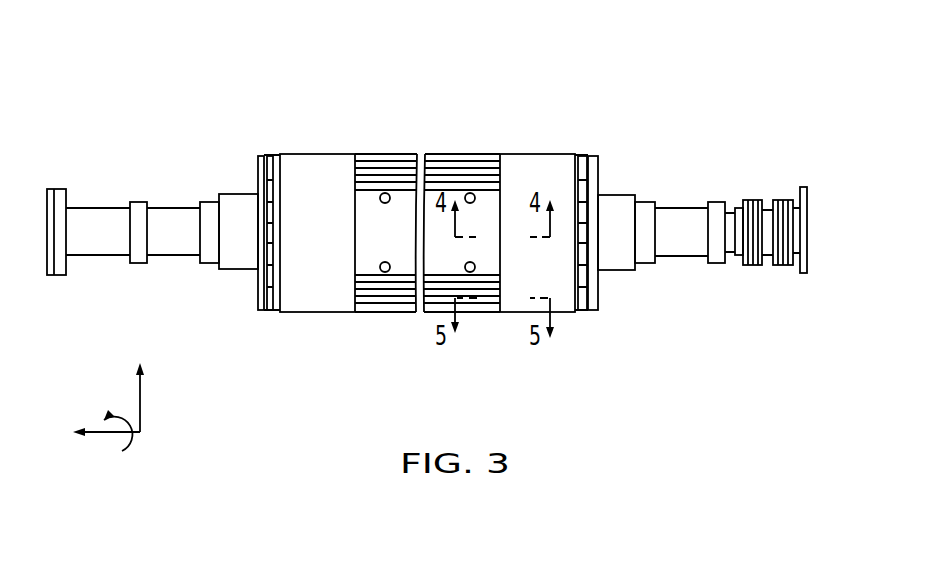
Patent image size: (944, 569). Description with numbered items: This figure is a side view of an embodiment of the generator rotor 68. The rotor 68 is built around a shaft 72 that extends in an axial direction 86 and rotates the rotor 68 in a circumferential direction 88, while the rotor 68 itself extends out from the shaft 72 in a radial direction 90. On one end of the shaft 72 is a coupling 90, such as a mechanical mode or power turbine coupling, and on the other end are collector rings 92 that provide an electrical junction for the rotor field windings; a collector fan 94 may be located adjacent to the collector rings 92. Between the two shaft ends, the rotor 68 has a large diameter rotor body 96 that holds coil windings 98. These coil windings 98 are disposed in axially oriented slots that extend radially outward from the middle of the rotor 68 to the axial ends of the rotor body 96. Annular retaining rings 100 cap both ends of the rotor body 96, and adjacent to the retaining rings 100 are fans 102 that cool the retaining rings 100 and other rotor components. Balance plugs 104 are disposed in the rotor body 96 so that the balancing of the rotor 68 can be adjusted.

The generator rotor 68 is at (580, 55).
The shaft 72 is at (98, 257).
The axial direction 86 is at (103, 433).
The circumferential direction 88 is at (132, 445).
The coupling 90 is at (58, 188).
The collector rings 92 is at (784, 200).
The collector fan 94 is at (807, 273).
The rotor body 96 is at (453, 140).
The coil windings 98 is at (380, 173).
The retaining rings 100 is at (548, 165).
The fans 102 is at (262, 157).
The balance plugs 104 is at (392, 194).